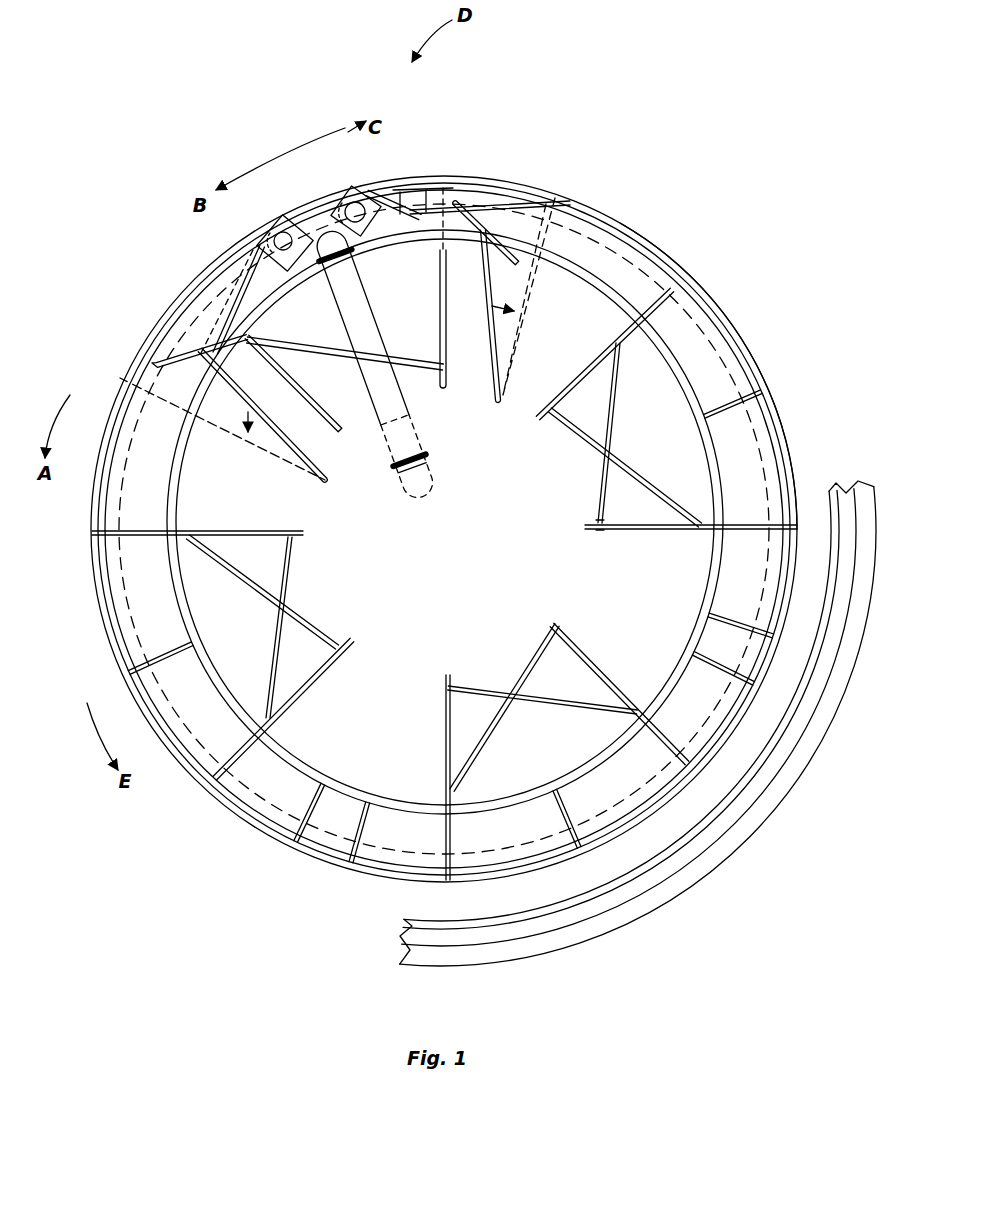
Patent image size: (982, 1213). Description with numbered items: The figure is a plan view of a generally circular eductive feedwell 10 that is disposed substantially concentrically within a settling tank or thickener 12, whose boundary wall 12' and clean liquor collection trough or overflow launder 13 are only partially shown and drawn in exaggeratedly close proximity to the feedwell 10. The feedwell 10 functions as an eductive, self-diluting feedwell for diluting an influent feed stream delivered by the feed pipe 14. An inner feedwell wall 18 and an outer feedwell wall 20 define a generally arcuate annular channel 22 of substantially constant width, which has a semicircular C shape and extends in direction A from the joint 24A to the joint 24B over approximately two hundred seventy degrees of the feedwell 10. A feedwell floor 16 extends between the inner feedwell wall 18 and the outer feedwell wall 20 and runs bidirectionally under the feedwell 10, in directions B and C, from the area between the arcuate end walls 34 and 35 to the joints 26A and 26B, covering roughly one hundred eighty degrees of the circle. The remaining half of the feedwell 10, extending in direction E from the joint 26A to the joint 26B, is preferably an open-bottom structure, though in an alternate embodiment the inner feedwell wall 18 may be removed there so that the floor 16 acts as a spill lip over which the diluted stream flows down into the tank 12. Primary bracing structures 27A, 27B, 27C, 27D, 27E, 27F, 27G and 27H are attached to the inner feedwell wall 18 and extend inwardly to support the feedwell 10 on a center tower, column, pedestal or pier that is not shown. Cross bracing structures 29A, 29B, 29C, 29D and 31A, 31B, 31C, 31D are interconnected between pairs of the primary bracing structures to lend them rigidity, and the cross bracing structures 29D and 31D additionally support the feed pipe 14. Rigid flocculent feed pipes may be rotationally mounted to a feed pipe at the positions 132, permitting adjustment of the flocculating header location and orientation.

The eductive feedwell 10 is at (732, 745).
The settling tank or thickener 12 is at (617, 706).
The boundary wall 12' is at (638, 726).
The clean liquor collection trough or overflow launder 13 is at (797, 730).
The feed pipe 14 is at (360, 312).
The feedwell floor 16 is at (610, 264).
The inner feedwell wall 18 is at (387, 792).
The outer feedwell wall 20 is at (257, 835).
The annular channel 22 is at (232, 812).
The joint 24A is at (122, 380).
The joint 24B is at (555, 198).
The joint 26A is at (122, 666).
The joint 26B is at (788, 396).
The primary bracing structure 27A is at (250, 530).
The primary bracing structure 27B is at (294, 700).
The primary bracing structure 27C is at (442, 735).
The primary bracing structure 27D is at (582, 642).
The primary bracing structure 27E is at (672, 530).
The primary bracing structure 27F is at (590, 374).
The primary bracing structure 27G is at (497, 404).
The primary bracing structure 27H is at (281, 424).
The cross bracing structure 29A is at (322, 612).
The cross bracing structure 29B is at (538, 662).
The cross bracing structure 29C is at (563, 430).
The cross bracing structure 29D is at (313, 415).
The cross bracing structure 31A is at (292, 553).
The cross bracing structure 31B is at (478, 688).
The cross bracing structure 31C is at (598, 514).
The cross bracing structure 31D is at (446, 455).
The arcuate end wall 34 is at (270, 223).
The arcuate end wall 35 is at (358, 192).
The positions 132 is at (325, 480).